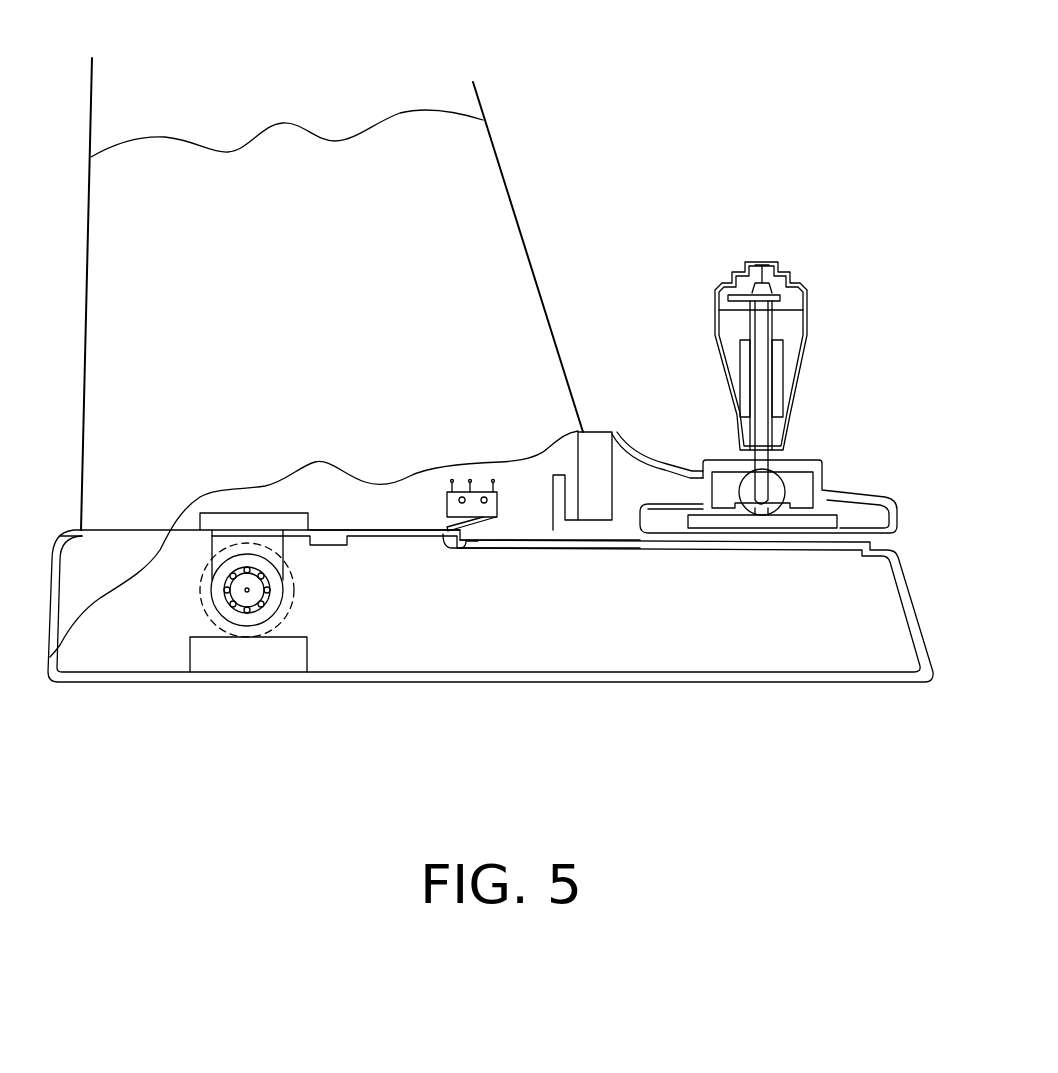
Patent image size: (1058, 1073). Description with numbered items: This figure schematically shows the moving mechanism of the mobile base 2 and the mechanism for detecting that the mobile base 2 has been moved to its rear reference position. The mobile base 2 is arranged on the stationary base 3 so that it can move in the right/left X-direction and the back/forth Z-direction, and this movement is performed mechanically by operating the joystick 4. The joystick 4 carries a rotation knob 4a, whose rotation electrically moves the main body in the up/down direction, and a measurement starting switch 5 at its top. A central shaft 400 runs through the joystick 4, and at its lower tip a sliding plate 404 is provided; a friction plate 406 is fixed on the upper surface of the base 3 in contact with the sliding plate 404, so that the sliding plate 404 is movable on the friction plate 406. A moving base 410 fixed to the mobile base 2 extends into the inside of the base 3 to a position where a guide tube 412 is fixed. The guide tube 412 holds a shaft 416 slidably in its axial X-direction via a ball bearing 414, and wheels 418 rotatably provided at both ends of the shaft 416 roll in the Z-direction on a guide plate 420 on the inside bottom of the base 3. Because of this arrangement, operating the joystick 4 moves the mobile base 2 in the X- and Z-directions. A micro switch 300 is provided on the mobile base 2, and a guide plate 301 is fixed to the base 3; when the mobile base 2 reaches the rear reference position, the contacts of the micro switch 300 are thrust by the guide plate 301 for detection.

The mobile base 2 is at (463, 217).
The base 3 is at (690, 635).
The joystick 4 is at (815, 243).
The rotation knob 4a is at (808, 303).
The measurement starting switch 5 is at (762, 262).
The micro switch 300 is at (497, 507).
The guide plate 301 is at (410, 548).
The central shaft 400 is at (760, 367).
The sliding plate 404 is at (818, 522).
The friction plate 406 is at (747, 538).
The moving base 410 is at (265, 538).
The guide tube 412 is at (222, 570).
The ball bearing 414 is at (270, 592).
The shaft 416 is at (243, 598).
The wheels 418 is at (202, 577).
The guide plate 420 is at (297, 658).